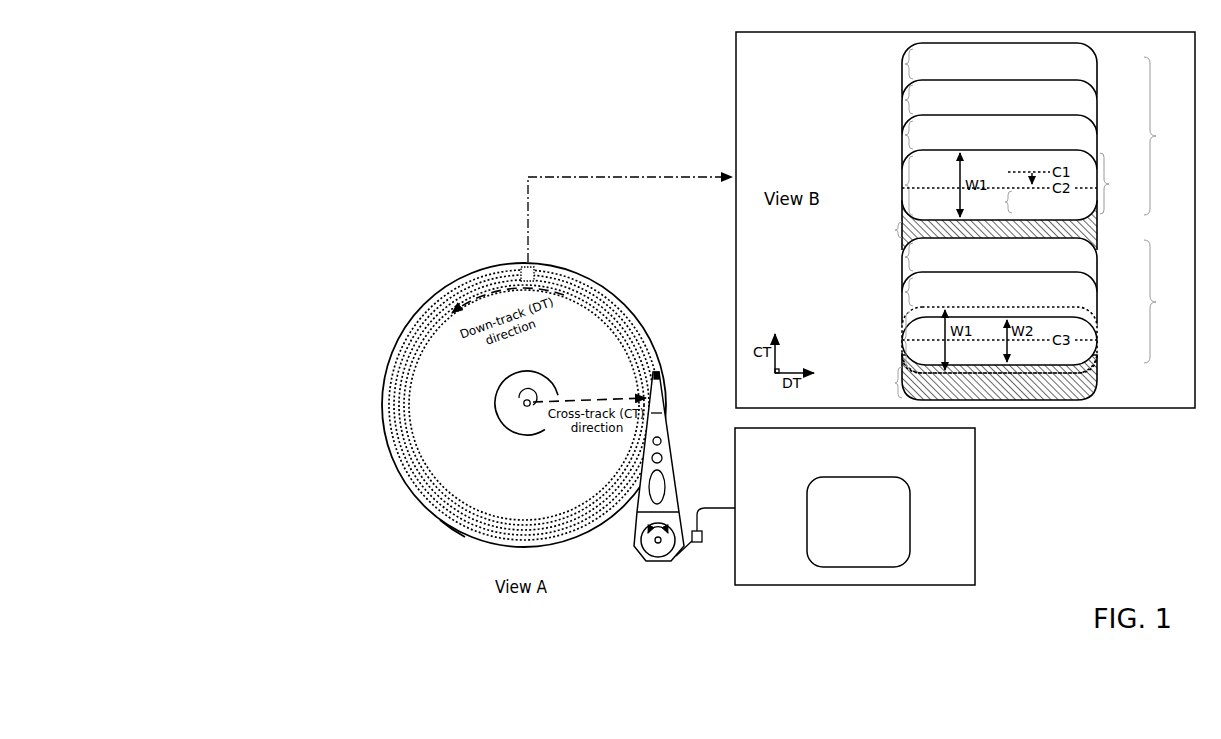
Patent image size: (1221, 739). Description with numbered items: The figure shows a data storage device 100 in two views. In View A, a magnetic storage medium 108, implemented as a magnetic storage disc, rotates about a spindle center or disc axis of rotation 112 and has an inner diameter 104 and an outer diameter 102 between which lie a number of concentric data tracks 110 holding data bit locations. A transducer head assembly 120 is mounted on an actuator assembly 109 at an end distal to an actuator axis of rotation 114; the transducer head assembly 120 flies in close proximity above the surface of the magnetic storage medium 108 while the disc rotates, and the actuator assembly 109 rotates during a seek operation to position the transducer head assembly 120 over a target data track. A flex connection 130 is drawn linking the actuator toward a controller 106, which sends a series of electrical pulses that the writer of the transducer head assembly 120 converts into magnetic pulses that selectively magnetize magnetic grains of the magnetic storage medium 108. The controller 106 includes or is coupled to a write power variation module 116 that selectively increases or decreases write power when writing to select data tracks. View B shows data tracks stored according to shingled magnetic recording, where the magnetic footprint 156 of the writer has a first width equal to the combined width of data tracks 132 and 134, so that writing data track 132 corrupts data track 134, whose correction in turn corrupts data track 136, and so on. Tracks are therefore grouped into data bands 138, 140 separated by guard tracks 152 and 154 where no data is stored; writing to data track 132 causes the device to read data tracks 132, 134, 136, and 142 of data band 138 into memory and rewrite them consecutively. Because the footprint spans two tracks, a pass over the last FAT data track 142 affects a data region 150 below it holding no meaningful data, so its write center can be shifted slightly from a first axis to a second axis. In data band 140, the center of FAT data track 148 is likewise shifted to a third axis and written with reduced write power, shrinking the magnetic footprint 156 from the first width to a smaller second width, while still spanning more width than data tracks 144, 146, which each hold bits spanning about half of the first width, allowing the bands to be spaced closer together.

The data storage device 100 is at (485, 125).
The outer diameter 102 is at (432, 299).
The inner diameter 104 is at (497, 411).
The controller 106 is at (855, 506).
The magnetic storage medium 108 is at (440, 521).
The actuator assembly 109 is at (670, 472).
The concentric data tracks 110 is at (413, 498).
The disc axis of rotation 112 is at (519, 400).
The actuator axis of rotation 114 is at (655, 541).
The write power variation module 116 is at (858, 522).
The transducer head assembly 120 is at (660, 376).
The flex cable 130 is at (684, 549).
The data track 132 is at (911, 56).
The data track 134 is at (911, 94).
The data track 136 is at (911, 131).
The data band 138 is at (1165, 136).
The data band 140 is at (1165, 301).
The FAT data track 142 is at (911, 166).
The data track 144 is at (911, 256).
The data track 146 is at (911, 290).
The FAT data track 148 is at (902, 334).
The data region 150 is at (995, 202).
The guard track 152 is at (981, 377).
The guard track 154 is at (979, 225).
The magnetic footprint 156 is at (1120, 183).